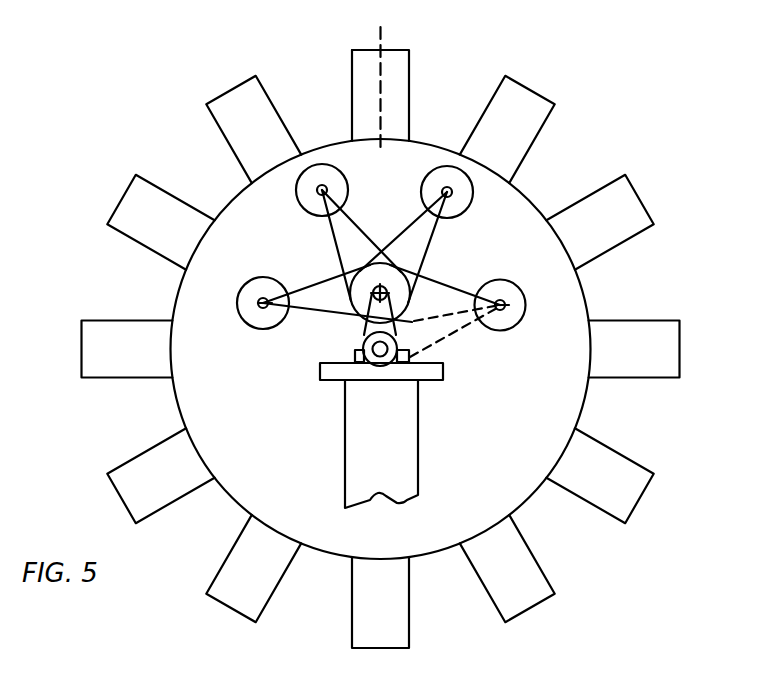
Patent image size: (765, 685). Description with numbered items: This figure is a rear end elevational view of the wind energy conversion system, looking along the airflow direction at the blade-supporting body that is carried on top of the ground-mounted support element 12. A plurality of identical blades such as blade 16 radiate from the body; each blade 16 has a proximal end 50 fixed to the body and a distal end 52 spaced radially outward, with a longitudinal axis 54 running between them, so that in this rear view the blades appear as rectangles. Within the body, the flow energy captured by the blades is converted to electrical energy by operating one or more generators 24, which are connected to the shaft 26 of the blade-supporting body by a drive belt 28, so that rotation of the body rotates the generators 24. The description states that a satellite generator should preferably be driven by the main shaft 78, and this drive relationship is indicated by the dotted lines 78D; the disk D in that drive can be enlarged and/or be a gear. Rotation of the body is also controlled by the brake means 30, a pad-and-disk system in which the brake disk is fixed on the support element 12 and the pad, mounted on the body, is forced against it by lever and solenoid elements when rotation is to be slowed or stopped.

The support element 12 is at (410, 467).
The blade 16 is at (410, 88).
The generator 24 is at (258, 318).
The shaft 26 is at (380, 293).
The drive belt 28 is at (313, 318).
The brake means 30 is at (412, 389).
The proximal end 50 is at (410, 137).
The distal end 52 is at (368, 50).
The longitudinal axis 54 is at (381, 52).
The main shaft 78 is at (357, 350).
The dotted lines 78D is at (452, 338).
The disk D is at (378, 367).